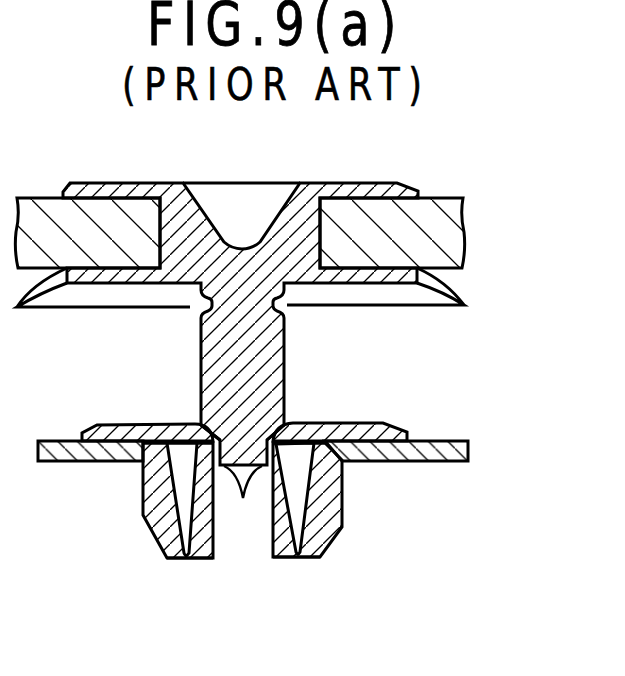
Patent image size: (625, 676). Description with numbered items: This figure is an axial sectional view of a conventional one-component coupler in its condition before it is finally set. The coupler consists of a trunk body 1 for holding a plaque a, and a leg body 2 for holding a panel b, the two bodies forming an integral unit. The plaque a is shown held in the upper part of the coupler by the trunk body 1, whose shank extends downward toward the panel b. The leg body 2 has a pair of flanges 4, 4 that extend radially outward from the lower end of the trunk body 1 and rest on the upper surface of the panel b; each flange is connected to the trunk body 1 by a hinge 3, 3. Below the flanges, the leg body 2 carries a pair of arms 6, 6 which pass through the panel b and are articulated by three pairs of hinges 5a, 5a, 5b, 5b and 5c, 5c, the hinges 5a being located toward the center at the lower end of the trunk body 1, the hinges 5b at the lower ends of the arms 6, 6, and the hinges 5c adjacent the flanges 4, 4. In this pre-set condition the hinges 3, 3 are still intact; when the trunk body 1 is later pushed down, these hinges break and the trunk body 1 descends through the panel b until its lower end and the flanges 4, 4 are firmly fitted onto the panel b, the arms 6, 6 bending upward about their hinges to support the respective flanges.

The trunk body 1 is at (286, 320).
The leg body 2 is at (304, 504).
The hinge 3 is at (217, 438).
The flange 4 is at (110, 426).
The hinge 5a is at (244, 500).
The hinge 5b is at (187, 560).
The hinge 5c is at (165, 443).
The arm 6 is at (215, 530).
The plaque a is at (423, 233).
The panel b is at (438, 440).